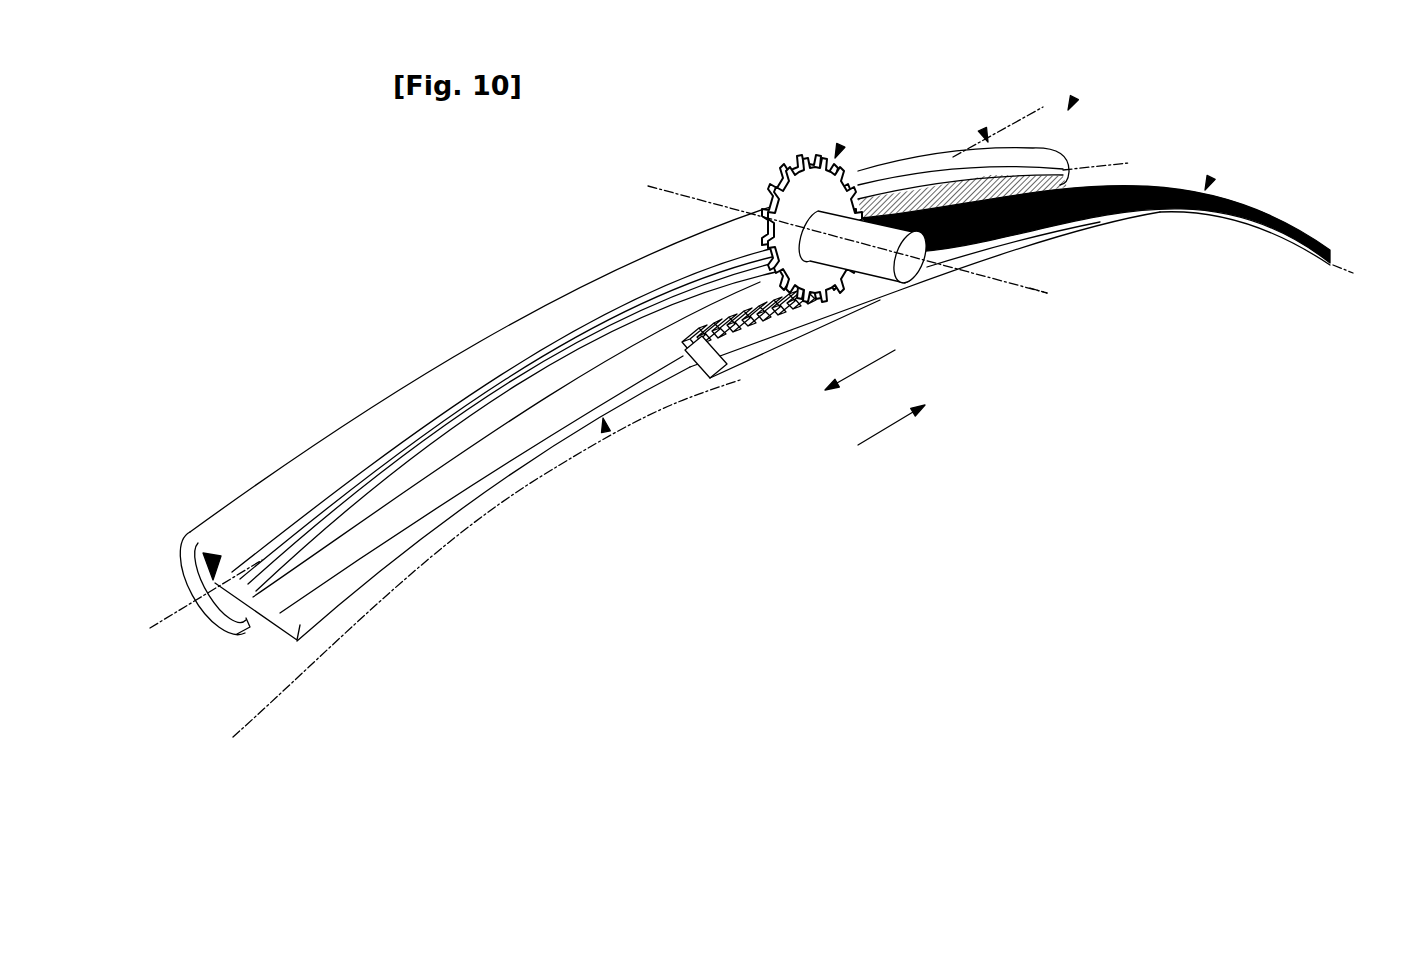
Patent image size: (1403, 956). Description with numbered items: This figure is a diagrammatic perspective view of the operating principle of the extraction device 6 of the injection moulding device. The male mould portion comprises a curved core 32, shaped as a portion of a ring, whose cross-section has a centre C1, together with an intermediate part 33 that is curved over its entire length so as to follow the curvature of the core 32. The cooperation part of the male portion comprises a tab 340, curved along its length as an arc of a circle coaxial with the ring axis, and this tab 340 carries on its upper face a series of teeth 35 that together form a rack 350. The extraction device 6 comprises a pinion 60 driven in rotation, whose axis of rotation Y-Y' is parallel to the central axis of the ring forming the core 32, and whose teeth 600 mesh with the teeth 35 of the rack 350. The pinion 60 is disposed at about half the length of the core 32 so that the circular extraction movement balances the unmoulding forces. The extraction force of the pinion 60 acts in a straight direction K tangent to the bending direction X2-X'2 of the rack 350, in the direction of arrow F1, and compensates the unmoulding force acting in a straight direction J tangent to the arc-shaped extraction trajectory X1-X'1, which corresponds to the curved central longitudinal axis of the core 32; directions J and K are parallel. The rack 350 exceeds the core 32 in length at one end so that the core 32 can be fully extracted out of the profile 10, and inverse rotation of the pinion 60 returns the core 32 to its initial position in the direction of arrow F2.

The profile 10 is at (395, 418).
The intermediate part 33 is at (265, 578).
The centre of the cross-section of the core C1 is at (209, 556).
The core 32 is at (240, 610).
The tab 340 is at (262, 628).
The extraction trajectory arc end X1 is at (191, 605).
The extraction trajectory arc end X'1 is at (1115, 165).
The direction of bending of the rack X2 is at (470, 568).
The direction of bending of the rack X'2 is at (1362, 278).
The straight direction of extraction force K is at (606, 431).
The teeth 35 is at (735, 360).
The teeth of the pinion 600 is at (797, 162).
The pinion 60 is at (840, 146).
The straight direction of unmoulding force J is at (982, 129).
The extraction device 6 is at (1074, 98).
The rack 350 is at (1211, 177).
The axis of rotation of the pinion Y is at (837, 233).
The axis of rotation of the pinion Y' is at (1048, 298).
The arrow of extraction direction F1 is at (860, 375).
The arrow of return direction F2 is at (891, 435).